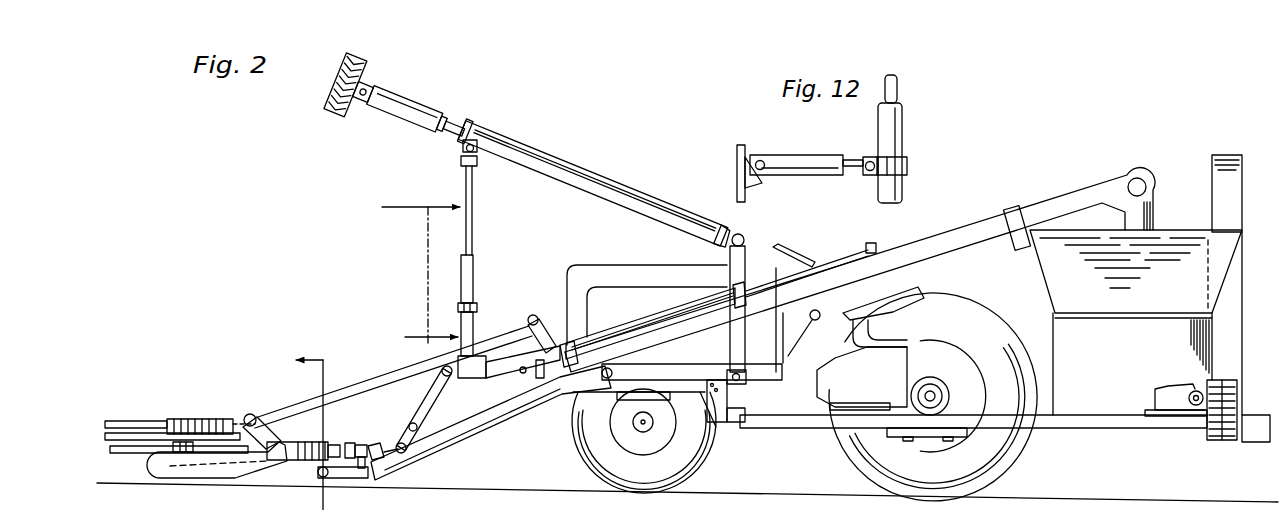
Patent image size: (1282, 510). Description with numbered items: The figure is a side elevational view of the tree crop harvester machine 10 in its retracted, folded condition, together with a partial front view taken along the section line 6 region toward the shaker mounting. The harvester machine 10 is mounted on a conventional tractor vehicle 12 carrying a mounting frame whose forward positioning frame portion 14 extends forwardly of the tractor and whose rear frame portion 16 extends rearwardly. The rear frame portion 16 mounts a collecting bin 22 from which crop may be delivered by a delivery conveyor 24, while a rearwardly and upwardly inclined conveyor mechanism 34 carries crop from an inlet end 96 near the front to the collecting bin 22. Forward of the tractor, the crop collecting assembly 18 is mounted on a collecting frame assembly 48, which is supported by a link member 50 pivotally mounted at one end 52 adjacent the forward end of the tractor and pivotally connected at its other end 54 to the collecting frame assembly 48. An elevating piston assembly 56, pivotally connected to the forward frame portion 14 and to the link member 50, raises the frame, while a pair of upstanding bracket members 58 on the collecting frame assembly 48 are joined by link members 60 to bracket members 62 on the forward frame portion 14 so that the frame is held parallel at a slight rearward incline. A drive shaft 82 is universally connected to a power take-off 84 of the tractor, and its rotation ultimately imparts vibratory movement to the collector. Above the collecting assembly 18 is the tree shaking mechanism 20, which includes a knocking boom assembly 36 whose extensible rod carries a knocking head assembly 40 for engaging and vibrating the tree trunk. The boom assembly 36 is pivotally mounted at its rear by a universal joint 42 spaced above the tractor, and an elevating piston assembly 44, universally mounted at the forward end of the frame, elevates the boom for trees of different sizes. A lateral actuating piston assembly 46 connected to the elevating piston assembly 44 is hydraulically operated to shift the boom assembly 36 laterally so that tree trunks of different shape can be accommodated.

In FIG. 2, the section line 6- 6 is at (300, 430).
In FIG. 2, the harvester machine 10 is at (308, 226).
In FIG. 2, the tractor vehicle 12 is at (632, 260).
In FIG. 2, the forward positioning frame portion 14 is at (489, 353).
In FIG. 12, the forward positioning frame portion 14 is at (737, 172).
In FIG. 2, the rear frame portion 16 is at (1077, 430).
In FIG. 2, the crop collecting assembly 18 is at (193, 355).
In FIG. 2, the tree shaking mechanism 20 is at (455, 95).
In FIG. 2, the collecting bin 22 is at (1169, 248).
In FIG. 2, the delivery conveyor 24 is at (1233, 170).
In FIG. 2, the conveyor mechanism 34 is at (929, 236).
In FIG. 2, the knocking boom assembly 36 is at (452, 123).
In FIG. 2, the knocking head assembly 40 is at (390, 83).
In FIG. 2, the universal joint 42 is at (748, 236).
In FIG. 2, the elevating piston assembly 44 is at (481, 261).
In FIG. 12, the elevating piston assembly 44 is at (907, 134).
In FIG. 12, the lateral actuating piston assembly 46 is at (818, 153).
In FIG. 2, the collecting frame assembly 48 is at (287, 438).
In FIG. 2, the link member 50 is at (516, 410).
In FIG. 2, the end of link member 52 is at (613, 374).
In FIG. 2, the other end of link member 54 is at (328, 478).
In FIG. 2, the elevating piston assembly 56 is at (410, 406).
In FIG. 2, the upstanding bracket members 58 is at (247, 413).
In FIG. 2, the link members 60 is at (366, 380).
In FIG. 2, the bracket members 62 is at (538, 332).
In FIG. 2, the drive shaft 82 is at (455, 422).
In FIG. 2, the power take-off 84 is at (534, 379).
In FIG. 2, the inlet end 96 is at (182, 470).